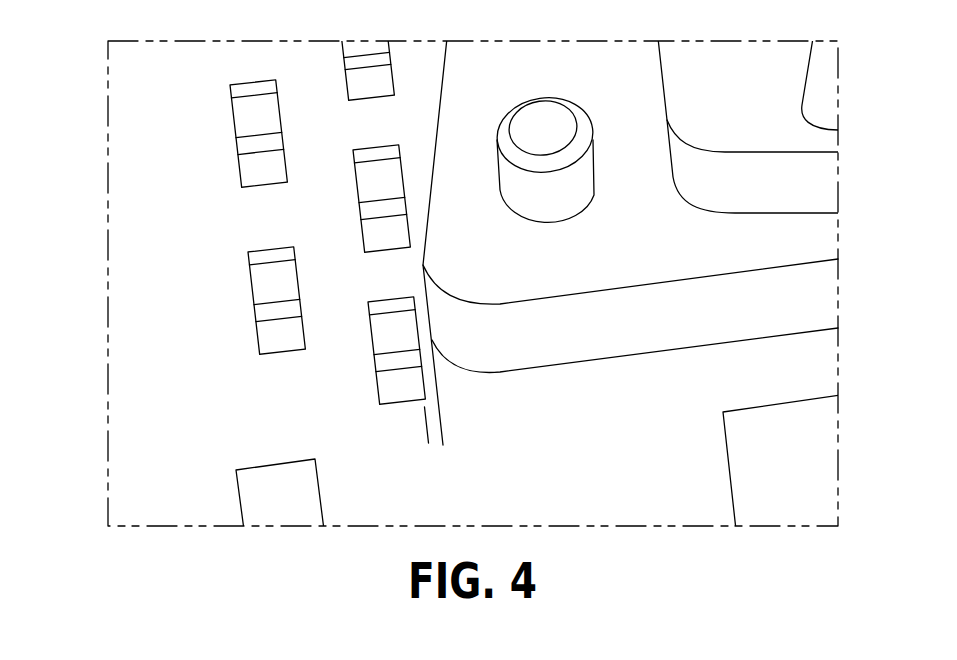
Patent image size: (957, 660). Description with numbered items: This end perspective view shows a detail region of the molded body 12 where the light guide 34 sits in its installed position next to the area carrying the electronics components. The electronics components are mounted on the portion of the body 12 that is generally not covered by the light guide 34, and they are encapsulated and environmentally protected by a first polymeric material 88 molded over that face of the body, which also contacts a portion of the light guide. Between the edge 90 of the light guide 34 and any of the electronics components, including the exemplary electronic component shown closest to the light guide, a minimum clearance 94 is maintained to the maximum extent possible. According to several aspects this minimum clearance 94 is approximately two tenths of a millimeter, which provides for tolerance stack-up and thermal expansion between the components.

The molded body 12 is at (128, 193).
The first polymeric material 88 is at (112, 170).
The light guide 34 is at (808, 242).
The edge of the light guide 90 is at (818, 310).
The minimum clearance 94 is at (387, 434).